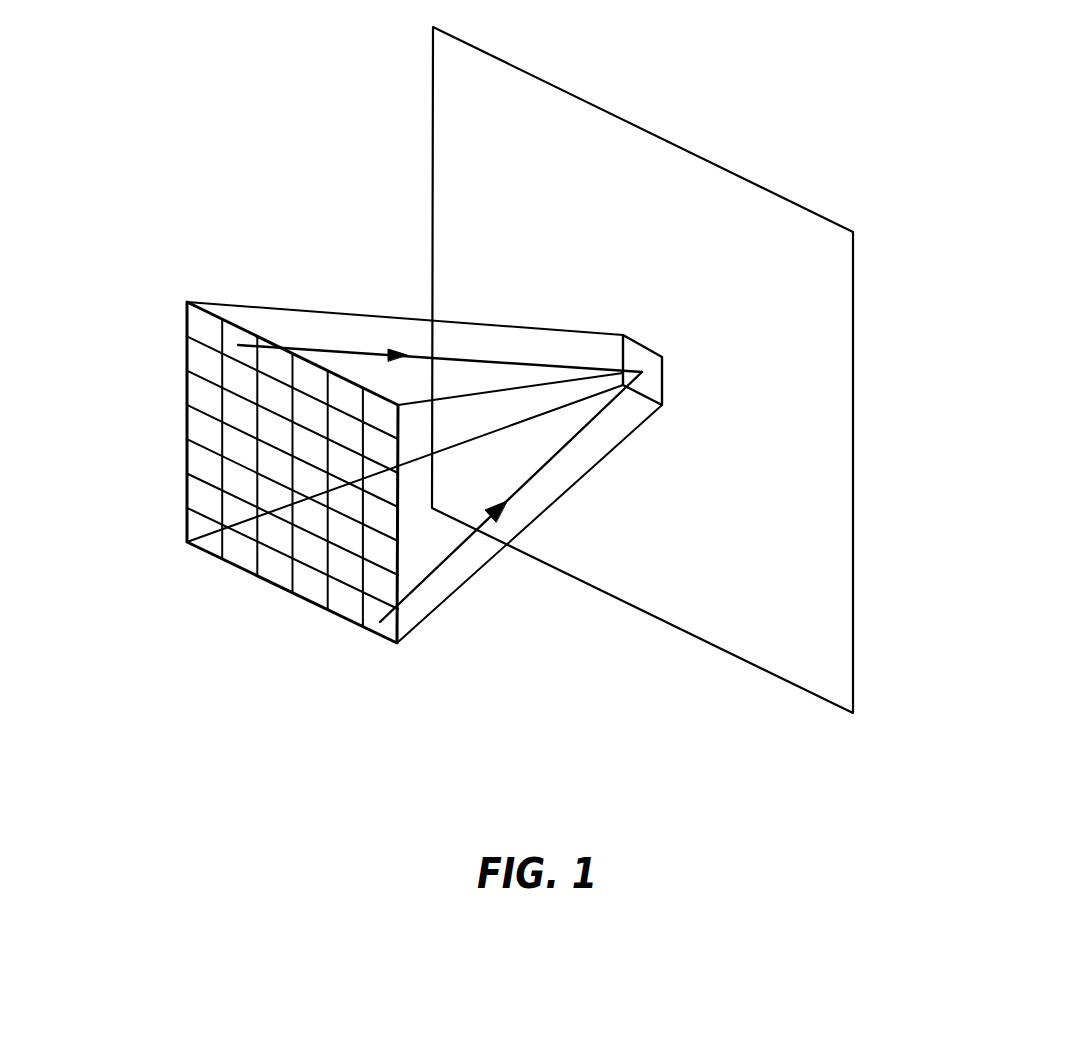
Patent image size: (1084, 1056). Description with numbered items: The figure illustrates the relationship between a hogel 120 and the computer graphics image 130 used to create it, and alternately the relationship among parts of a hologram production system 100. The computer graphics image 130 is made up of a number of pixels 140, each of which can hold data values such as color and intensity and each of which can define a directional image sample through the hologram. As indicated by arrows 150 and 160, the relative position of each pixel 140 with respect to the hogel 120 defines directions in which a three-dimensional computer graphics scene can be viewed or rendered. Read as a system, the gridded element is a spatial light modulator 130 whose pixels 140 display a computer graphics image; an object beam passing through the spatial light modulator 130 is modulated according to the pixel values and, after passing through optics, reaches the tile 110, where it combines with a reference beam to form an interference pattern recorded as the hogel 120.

The hologram production system 100 is at (176, 86).
The tile 110 is at (853, 673).
The hogel 120 is at (664, 378).
The computer graphics image / spatial light modulator 130 is at (187, 323).
The pixel 140 is at (202, 428).
The arrow 150 is at (335, 350).
The arrow 160 is at (453, 555).